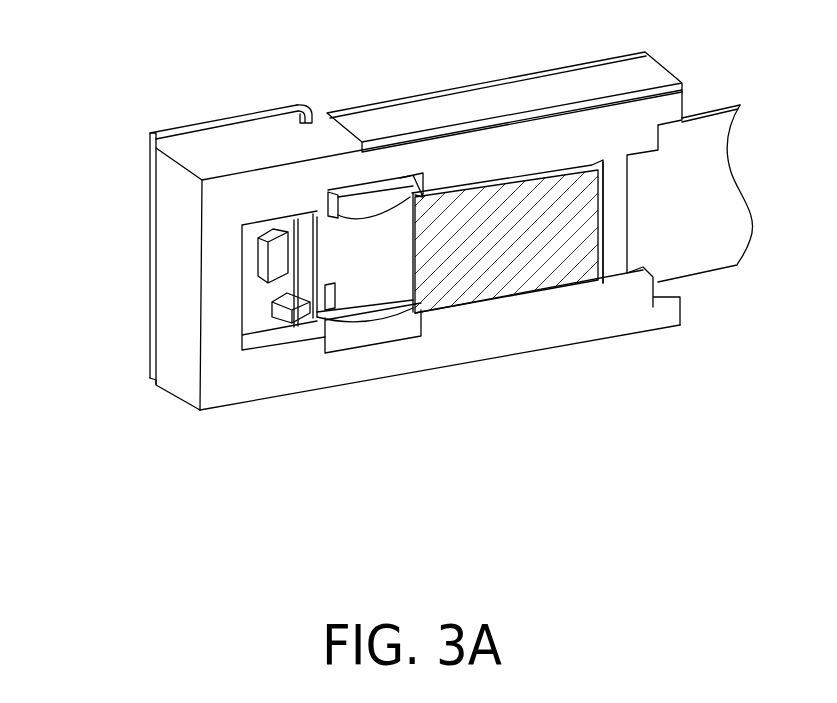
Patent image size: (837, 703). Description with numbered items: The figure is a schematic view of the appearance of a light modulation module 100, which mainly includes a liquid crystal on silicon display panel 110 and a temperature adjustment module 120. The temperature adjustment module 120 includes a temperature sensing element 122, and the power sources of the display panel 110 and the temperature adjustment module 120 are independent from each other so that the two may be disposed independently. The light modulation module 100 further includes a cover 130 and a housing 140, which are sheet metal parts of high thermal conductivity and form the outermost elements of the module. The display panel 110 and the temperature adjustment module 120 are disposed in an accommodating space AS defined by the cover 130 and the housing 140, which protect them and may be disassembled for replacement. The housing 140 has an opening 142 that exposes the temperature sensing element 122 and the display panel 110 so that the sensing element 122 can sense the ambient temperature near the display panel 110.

The light modulation module 100 is at (803, 520).
The liquid crystal on silicon (LCoS) display panel 110 is at (403, 310).
The temperature adjustment module 120 is at (166, 269).
The temperature sensing element 122 is at (280, 256).
The cover 130 is at (503, 100).
The housing 140 is at (222, 291).
The opening 142 is at (512, 268).
The accommodating space AS is at (375, 322).